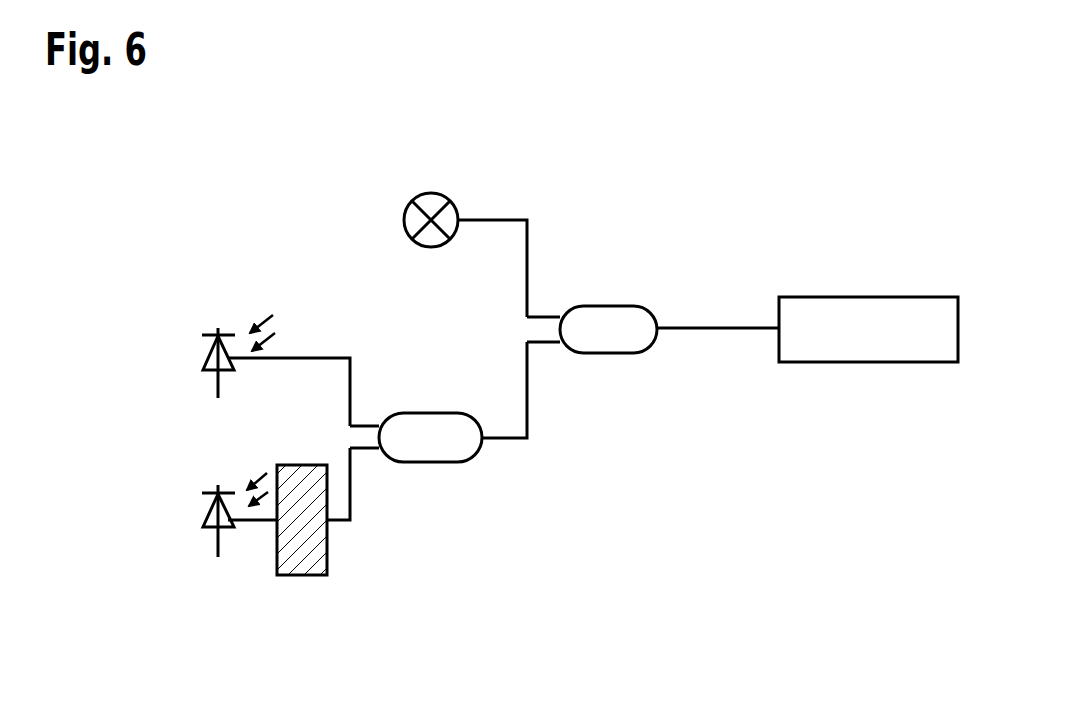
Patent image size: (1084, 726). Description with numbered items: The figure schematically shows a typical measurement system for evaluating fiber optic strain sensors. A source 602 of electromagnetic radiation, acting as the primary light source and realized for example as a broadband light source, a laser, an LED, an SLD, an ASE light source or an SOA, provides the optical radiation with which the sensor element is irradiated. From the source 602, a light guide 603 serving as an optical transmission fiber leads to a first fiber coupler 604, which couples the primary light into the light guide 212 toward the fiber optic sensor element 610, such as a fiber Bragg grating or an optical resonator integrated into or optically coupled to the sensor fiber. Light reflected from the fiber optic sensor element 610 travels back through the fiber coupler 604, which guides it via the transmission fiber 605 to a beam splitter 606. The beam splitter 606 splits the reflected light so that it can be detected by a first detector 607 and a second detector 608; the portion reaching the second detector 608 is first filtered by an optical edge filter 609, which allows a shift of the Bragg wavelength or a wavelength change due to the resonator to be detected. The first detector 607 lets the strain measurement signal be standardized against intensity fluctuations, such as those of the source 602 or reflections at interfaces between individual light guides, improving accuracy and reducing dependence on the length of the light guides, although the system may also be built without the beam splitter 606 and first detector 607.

The source of electromagnetic radiation 602 is at (427, 193).
The light guide 603 is at (510, 220).
The first fiber coupler 604 is at (610, 306).
The light guide 212 is at (725, 328).
The fiber optic sensor element 610 is at (880, 297).
The transmission fiber 605 is at (513, 438).
The beam splitter 606 is at (430, 462).
The first detector 607 is at (218, 390).
The second detector 608 is at (218, 543).
The optical edge filter 609 is at (302, 465).